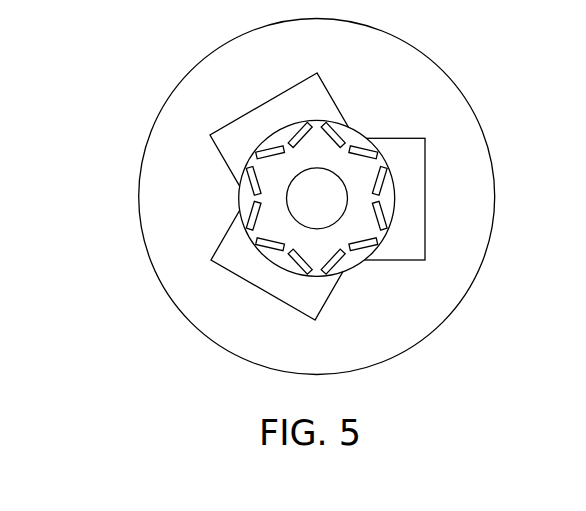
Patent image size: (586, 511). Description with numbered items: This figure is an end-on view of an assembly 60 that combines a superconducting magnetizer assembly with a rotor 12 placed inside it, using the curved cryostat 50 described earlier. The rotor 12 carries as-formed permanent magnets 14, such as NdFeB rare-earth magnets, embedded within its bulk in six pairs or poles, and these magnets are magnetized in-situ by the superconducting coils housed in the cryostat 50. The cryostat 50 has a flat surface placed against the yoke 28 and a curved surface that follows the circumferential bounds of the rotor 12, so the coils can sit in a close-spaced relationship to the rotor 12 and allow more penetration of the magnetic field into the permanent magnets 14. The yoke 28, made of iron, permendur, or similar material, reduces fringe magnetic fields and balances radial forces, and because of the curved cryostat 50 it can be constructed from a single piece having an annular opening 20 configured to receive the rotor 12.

The assembly 60 is at (131, 69).
The yoke 28 is at (150, 135).
The cryostat 50 is at (393, 138).
The rotor 12 is at (388, 158).
The permanent magnets 14 is at (393, 182).
The annular opening 20 is at (354, 223).